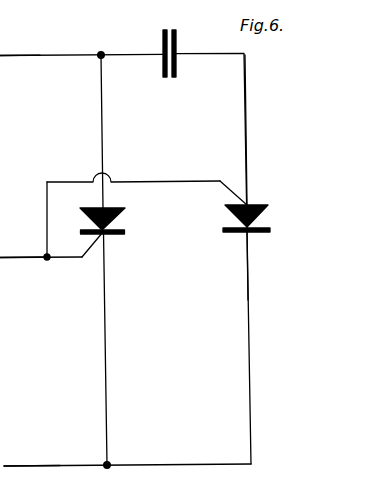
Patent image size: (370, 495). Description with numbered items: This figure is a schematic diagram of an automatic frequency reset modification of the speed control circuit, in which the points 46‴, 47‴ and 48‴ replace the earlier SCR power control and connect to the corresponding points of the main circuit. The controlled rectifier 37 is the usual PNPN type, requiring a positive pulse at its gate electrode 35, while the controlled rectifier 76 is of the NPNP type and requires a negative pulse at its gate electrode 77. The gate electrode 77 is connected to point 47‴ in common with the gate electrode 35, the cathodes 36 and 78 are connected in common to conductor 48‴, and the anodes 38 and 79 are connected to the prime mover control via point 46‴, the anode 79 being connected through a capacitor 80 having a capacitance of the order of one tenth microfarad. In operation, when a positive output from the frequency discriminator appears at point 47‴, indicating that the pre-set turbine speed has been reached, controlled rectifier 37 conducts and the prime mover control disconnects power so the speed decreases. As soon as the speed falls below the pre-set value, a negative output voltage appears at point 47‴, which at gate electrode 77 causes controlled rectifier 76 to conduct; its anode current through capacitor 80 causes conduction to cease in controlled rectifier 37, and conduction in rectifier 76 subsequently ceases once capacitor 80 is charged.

The gate electrode 35 is at (91, 249).
The cathode 36 is at (118, 235).
The controlled rectifier 37 is at (122, 220).
The anode 38 is at (97, 208).
The point 46 is at (35, 35).
The point 47 is at (36, 241).
The conductor 48 is at (43, 446).
The controlled rectifier 76 is at (265, 218).
The gate electrode 77 is at (230, 162).
The cathode 78 is at (263, 232).
The anode 79 is at (256, 205).
The capacitor 80 is at (177, 44).